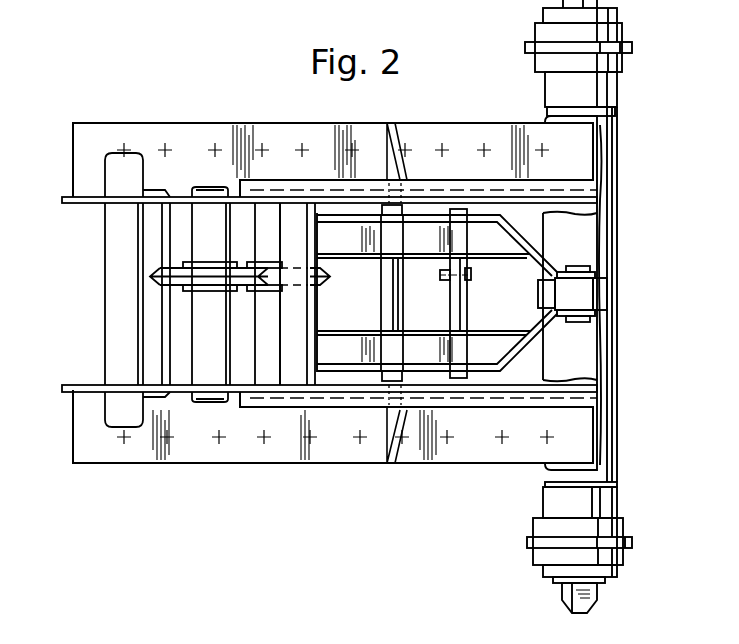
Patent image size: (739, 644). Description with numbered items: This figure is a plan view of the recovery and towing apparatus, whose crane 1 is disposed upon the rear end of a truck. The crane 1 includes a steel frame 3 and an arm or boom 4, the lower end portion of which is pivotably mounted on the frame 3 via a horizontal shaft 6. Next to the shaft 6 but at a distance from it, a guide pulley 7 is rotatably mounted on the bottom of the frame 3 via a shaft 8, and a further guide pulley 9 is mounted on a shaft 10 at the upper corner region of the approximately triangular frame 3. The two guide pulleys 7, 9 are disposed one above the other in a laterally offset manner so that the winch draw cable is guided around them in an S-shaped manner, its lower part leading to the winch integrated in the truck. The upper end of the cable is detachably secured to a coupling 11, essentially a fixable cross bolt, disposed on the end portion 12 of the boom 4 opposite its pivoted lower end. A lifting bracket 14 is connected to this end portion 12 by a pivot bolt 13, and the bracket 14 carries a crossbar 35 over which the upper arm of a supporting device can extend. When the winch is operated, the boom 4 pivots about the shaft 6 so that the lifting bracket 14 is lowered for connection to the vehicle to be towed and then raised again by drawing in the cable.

The crane 1 is at (166, 108).
The steel frame 3 is at (203, 456).
The arm or boom 4 is at (355, 242).
The horizontal shaft 6 is at (393, 313).
The guide pulley 7 is at (312, 300).
The shaft 8 is at (265, 378).
The further guide pulley 9 is at (177, 285).
The shaft 10 is at (207, 185).
The coupling 11 is at (452, 303).
The end portion 12 is at (548, 330).
The pivot bolt 13 is at (572, 266).
The lifting bracket 14 is at (616, 250).
The crossbar 35 is at (553, 501).